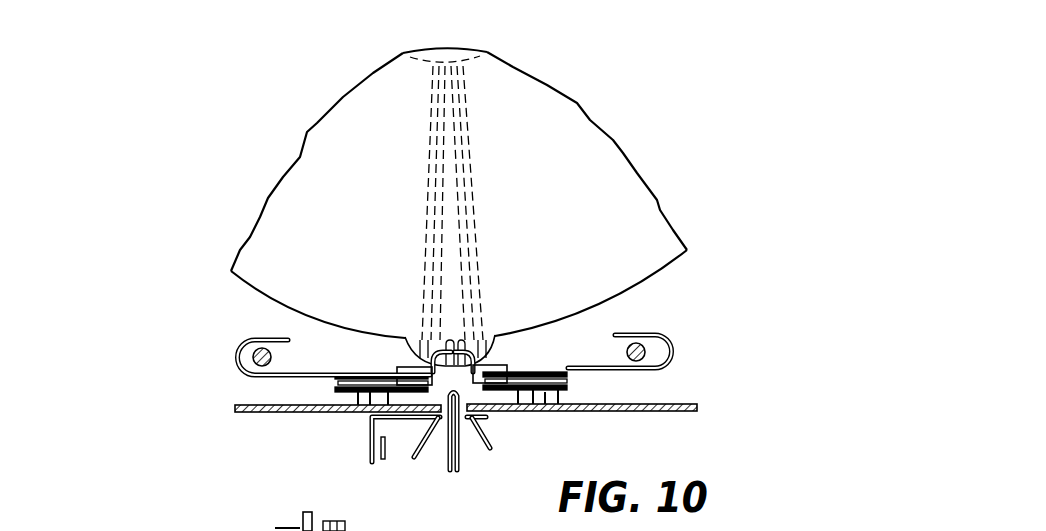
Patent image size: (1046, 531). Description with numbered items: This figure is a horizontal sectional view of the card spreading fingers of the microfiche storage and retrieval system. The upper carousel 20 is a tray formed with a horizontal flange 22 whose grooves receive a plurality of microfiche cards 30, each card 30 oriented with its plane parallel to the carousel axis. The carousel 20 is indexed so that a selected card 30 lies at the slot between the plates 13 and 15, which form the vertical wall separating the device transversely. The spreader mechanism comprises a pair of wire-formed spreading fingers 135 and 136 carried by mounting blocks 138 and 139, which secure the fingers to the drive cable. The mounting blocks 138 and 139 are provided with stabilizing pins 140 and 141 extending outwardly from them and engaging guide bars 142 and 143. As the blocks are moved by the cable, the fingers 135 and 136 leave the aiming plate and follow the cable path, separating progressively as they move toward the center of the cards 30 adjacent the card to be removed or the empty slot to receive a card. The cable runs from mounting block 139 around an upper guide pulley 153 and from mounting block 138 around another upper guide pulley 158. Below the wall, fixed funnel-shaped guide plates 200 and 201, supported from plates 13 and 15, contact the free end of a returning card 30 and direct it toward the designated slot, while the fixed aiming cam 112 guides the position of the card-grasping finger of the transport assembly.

The upper carousel 20 is at (621, 153).
The flange 22 is at (688, 253).
The microfiche card 30 is at (430, 250).
The spreading finger 135 is at (406, 340).
The spreading finger 136 is at (498, 335).
The mounting block 138 is at (400, 366).
The mounting block 139 is at (507, 356).
The stabilizing pin 140 is at (248, 380).
The stabilizing pin 141 is at (663, 370).
The guide bar 142 is at (253, 348).
The guide bar 143 is at (670, 343).
The plate 13 is at (265, 414).
The plate 15 is at (658, 412).
The upper guide pulley 158 is at (358, 397).
The aiming cam 112 is at (383, 462).
The guide plate 201 is at (422, 462).
The guide plate 200 is at (492, 444).
The upper guide pulley 153 is at (556, 413).